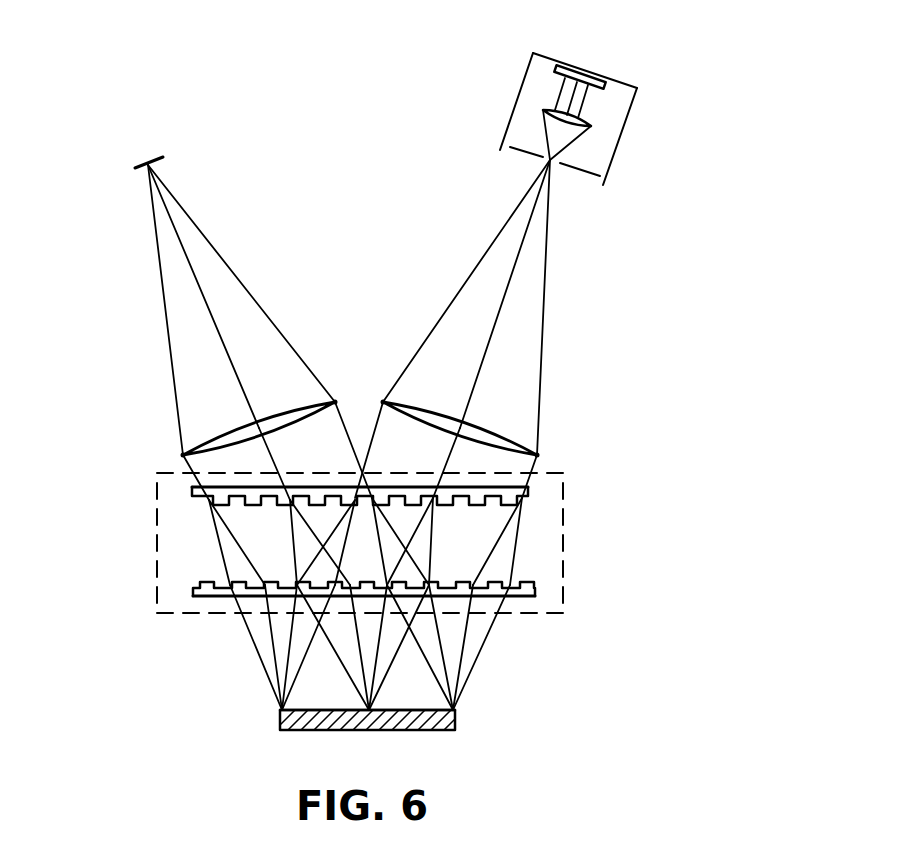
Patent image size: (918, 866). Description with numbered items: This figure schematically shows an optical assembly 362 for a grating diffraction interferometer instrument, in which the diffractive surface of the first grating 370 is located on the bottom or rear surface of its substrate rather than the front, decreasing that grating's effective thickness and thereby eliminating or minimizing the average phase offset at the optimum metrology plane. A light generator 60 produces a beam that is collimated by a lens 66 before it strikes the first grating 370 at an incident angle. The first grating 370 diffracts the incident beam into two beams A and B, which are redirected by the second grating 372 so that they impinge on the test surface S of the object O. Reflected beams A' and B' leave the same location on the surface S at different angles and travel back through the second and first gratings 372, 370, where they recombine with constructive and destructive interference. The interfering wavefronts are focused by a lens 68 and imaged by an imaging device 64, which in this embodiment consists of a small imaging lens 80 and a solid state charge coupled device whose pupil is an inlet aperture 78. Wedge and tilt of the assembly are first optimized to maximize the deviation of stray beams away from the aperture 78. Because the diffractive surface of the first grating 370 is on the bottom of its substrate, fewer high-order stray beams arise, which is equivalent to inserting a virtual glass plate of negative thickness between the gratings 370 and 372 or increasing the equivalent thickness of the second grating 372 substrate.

The light generator 60 is at (148, 160).
The imaging device 64 is at (614, 74).
The lens 66 is at (223, 433).
The lens 68 is at (503, 433).
The inlet aperture 78 is at (580, 167).
The imaging lens 80 is at (588, 124).
The optical assembly 362 is at (574, 484).
The first grating 370 is at (530, 492).
The second grating 372 is at (530, 590).
The beam A is at (144, 538).
The beam B is at (177, 542).
The reflected beam A' is at (231, 647).
The reflected beam B' is at (204, 655).
The test surface S is at (420, 710).
The object O is at (457, 720).